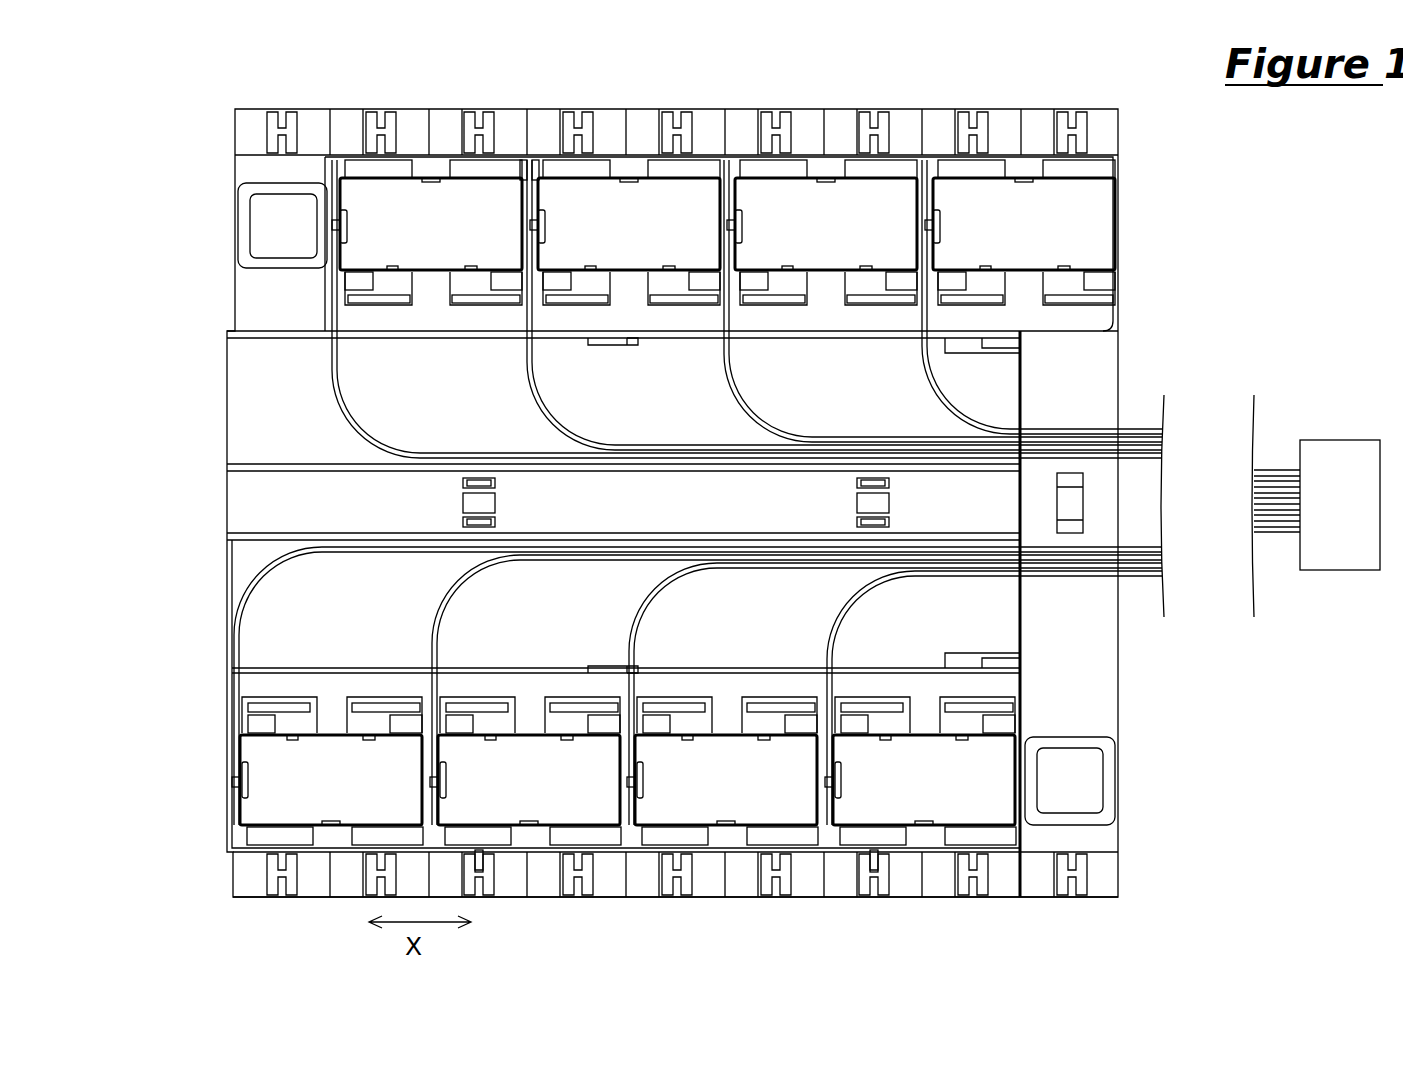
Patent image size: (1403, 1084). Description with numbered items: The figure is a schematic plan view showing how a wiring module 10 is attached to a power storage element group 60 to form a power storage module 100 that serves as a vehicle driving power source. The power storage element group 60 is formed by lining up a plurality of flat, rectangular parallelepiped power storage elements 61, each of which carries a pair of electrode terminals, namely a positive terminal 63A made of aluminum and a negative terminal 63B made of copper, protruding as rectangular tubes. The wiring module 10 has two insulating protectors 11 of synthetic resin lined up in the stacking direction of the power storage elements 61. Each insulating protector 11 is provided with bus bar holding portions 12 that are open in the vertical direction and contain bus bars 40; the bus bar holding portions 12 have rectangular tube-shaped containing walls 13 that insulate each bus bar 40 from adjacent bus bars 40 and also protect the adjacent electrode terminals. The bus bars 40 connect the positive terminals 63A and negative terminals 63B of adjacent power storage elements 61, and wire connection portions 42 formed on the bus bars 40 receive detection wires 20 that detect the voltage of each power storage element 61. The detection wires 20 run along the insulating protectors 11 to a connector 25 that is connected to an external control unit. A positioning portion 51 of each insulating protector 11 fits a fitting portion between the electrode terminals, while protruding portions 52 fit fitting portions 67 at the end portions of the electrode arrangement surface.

The wiring module 10 is at (1150, 250).
The power storage module 100 is at (685, 963).
The insulating protector 11 is at (1003, 390).
The bus bar holding portion 12 is at (522, 162).
The containing wall 13 is at (536, 165).
The detection wire 20 is at (337, 380).
The connector 25 is at (1346, 440).
The bus bar 40 is at (1098, 190).
The wire connection portion 42 is at (932, 222).
The positioning portion 51 is at (463, 488).
The protruding portion 52 is at (872, 860).
The power storage element group 60 is at (824, 86).
The power storage element 61 is at (314, 120).
The positive terminal 63A is at (265, 223).
The negative terminal 63B is at (1086, 785).
The fitting portion 67 is at (885, 883).